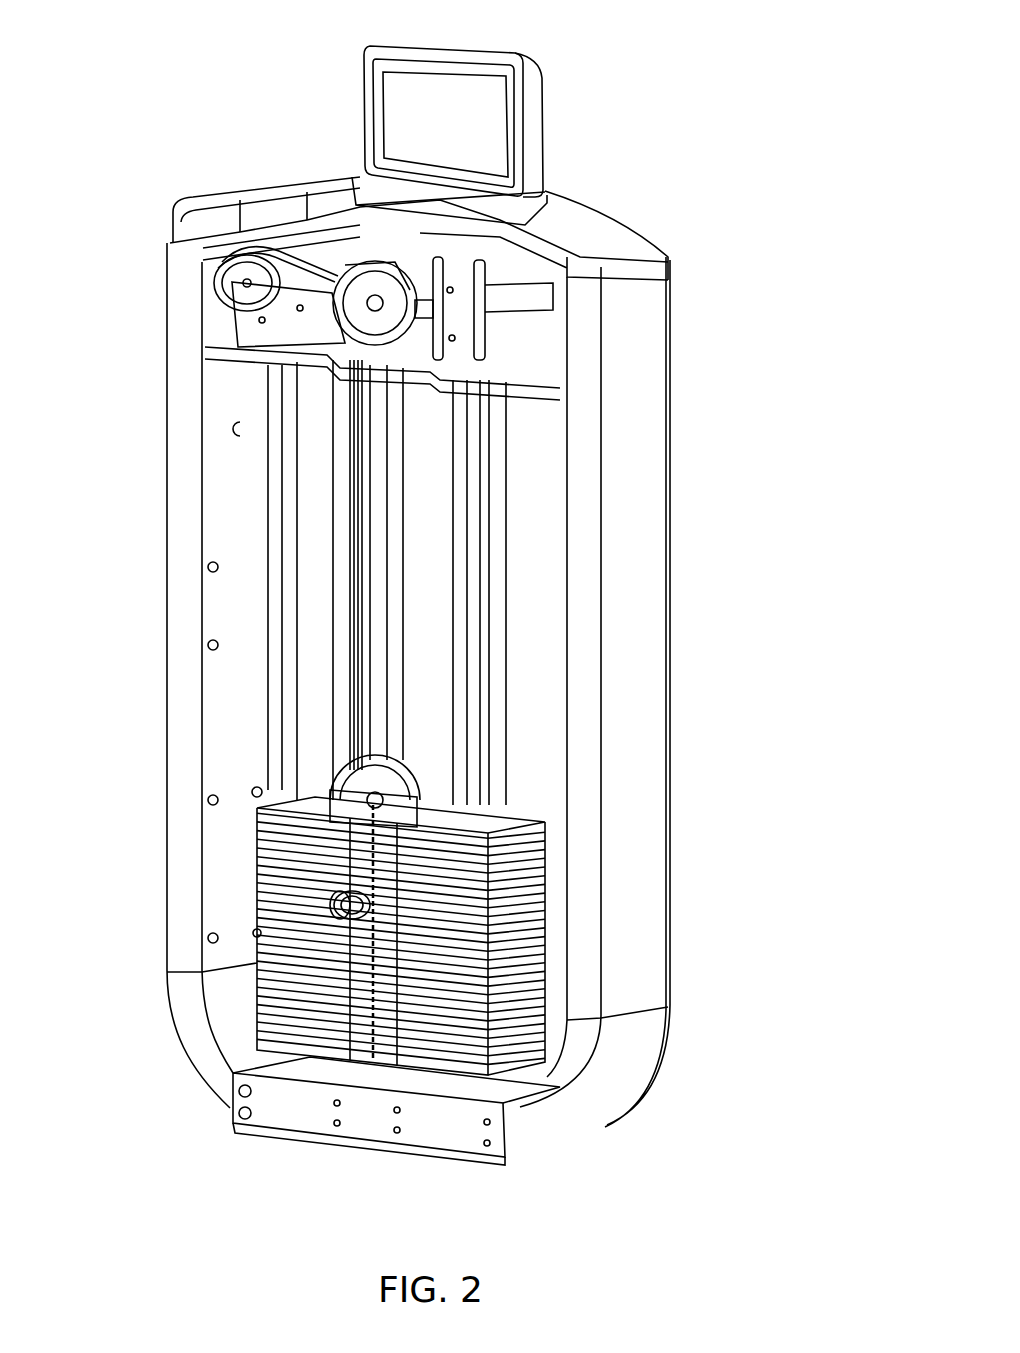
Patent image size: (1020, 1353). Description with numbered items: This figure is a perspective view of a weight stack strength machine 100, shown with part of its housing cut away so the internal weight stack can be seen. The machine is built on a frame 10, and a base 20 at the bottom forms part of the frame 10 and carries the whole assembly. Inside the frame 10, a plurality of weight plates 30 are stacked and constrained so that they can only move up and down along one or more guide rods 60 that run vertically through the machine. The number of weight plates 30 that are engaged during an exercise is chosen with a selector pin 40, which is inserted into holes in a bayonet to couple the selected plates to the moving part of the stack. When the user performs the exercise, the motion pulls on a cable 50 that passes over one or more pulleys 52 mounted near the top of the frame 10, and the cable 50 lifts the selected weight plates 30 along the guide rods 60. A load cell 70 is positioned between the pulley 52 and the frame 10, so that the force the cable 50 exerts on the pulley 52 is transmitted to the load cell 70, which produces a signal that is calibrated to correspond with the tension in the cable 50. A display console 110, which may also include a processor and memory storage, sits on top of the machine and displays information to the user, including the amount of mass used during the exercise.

The frame 10 is at (638, 962).
The base 20 is at (445, 1134).
The weight plates 30 is at (535, 940).
The selector pin 40 is at (368, 892).
The cable 50 is at (305, 258).
The pulley 52 is at (215, 278).
The guide rods 60 is at (462, 670).
The load cell 70 is at (344, 262).
The weight stack strength machine 100 is at (658, 185).
The display console 110 is at (447, 127).